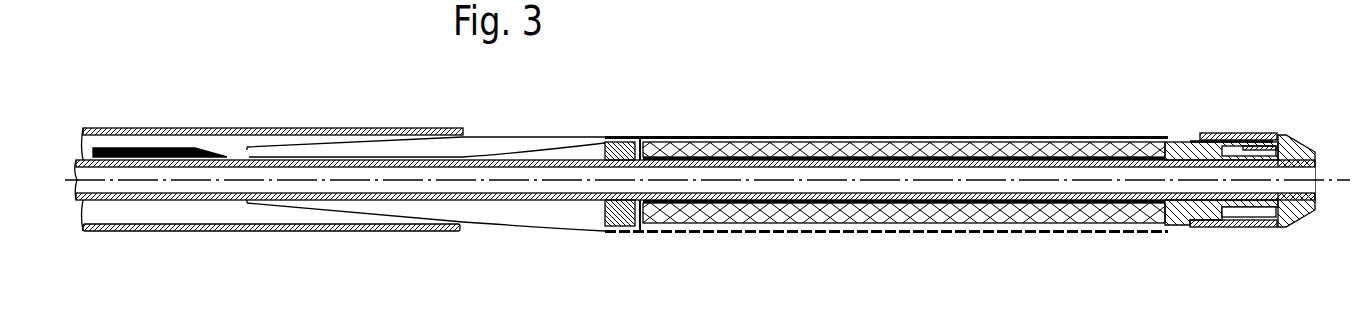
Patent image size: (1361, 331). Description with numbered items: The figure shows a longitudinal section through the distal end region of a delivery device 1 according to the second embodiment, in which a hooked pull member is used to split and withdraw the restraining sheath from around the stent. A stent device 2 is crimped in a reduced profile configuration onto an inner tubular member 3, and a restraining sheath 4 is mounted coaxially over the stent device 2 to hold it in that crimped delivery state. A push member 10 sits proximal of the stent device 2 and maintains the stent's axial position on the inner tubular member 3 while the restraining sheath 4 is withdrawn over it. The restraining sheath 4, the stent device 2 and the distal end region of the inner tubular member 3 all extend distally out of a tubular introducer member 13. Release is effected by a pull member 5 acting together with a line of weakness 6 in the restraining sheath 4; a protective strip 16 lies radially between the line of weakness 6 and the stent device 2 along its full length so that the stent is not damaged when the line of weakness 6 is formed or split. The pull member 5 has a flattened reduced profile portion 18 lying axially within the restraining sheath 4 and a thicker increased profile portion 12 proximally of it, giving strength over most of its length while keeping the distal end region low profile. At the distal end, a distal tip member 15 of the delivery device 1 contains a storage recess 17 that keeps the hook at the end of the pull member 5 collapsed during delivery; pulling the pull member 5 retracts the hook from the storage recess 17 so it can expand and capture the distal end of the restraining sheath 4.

The delivery device 1 is at (782, 103).
The stent device 2 is at (878, 152).
The inner tubular member 3 is at (1287, 169).
The restraining sheath 4 is at (987, 140).
The pull member 5 is at (236, 150).
The line of weakness 6 is at (673, 233).
The push member 10 is at (617, 147).
The increased profile portion 12 is at (114, 149).
The tubular introducer member 13 is at (200, 128).
The distal tip member 15 is at (1183, 150).
The protective strip 16 is at (937, 225).
The storage recess 17 is at (1237, 150).
The reduced profile portion 18 is at (358, 155).